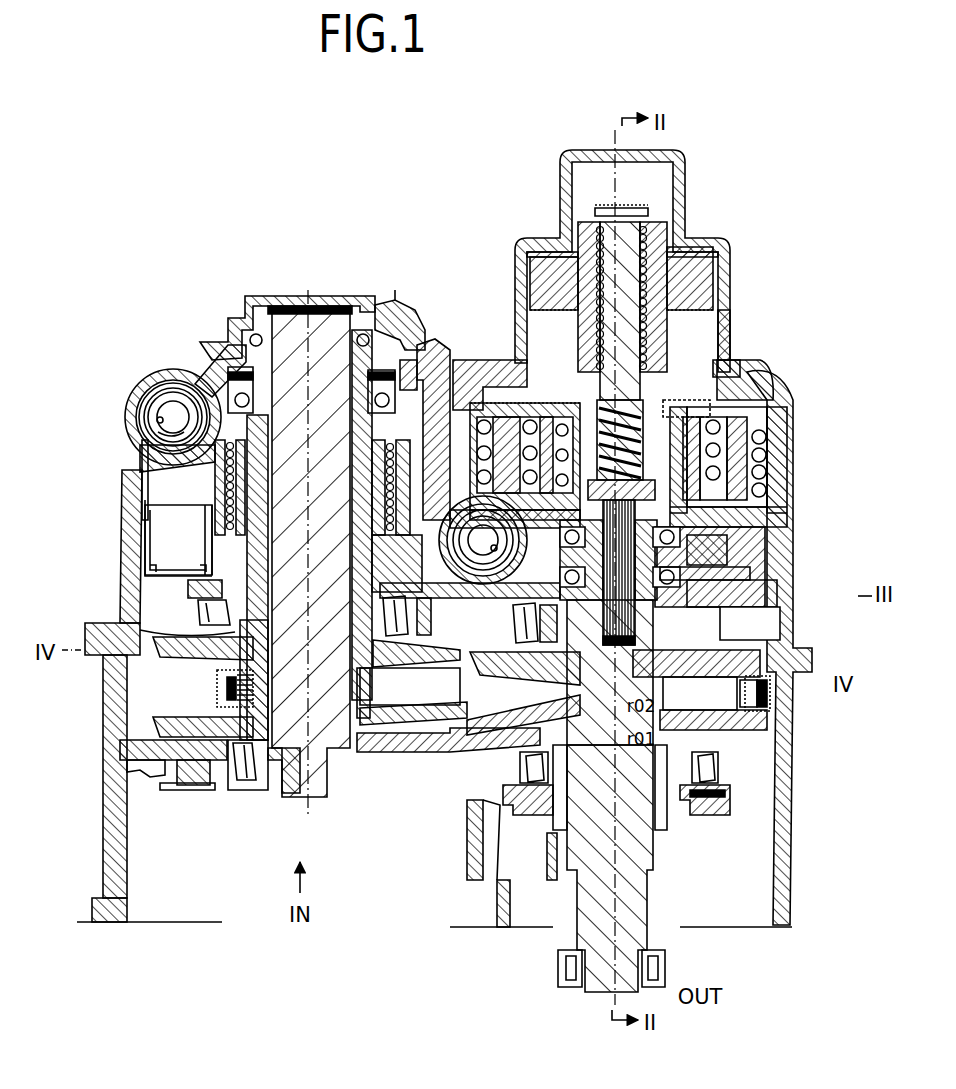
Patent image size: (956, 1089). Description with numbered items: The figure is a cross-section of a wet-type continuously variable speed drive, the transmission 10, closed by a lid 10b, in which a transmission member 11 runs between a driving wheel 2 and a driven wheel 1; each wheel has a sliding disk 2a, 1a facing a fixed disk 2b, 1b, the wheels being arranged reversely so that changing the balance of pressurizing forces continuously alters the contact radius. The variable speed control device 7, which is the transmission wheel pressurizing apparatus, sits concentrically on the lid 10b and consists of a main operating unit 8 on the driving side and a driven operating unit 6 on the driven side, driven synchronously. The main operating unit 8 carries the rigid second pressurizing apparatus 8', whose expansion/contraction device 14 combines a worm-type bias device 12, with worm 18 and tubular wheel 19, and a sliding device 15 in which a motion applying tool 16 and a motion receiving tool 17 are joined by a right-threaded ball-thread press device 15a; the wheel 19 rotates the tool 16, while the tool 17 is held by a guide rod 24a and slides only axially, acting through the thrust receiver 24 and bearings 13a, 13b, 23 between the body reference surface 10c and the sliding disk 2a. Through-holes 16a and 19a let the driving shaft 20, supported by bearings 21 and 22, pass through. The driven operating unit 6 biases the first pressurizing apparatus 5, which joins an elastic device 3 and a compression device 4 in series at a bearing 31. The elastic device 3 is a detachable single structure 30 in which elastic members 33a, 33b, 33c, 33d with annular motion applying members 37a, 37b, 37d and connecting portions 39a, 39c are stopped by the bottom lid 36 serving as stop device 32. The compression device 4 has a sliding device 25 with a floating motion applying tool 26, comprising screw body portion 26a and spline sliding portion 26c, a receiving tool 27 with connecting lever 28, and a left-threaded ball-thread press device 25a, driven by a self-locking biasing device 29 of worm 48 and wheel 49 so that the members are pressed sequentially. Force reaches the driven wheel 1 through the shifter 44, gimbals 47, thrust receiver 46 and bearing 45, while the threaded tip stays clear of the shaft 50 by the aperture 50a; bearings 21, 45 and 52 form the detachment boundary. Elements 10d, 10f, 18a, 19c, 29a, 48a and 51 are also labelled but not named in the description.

The driven transmission wheel 1 is at (553, 860).
The sliding disk 1a is at (500, 722).
The fixed disk 1b is at (517, 662).
The driving transmission wheel 2 is at (338, 788).
The sliding disk 2a is at (175, 646).
The fixed disk 2b is at (176, 726).
The elastic device 3 is at (840, 384).
The compression device 4 is at (716, 320).
The first pressurizing apparatus 5 is at (752, 217).
The driven operating unit 6 is at (503, 236).
The variable speed control device 7 is at (428, 304).
The main operating unit 8 is at (391, 232).
The second pressurizing apparatus 8' is at (147, 535).
The transmission 10 is at (150, 282).
The lid 10b is at (135, 438).
The body reference surface 10c is at (380, 340).
The housing recess 10d is at (750, 623).
The housing bottom wall 10f is at (212, 782).
The transmission member 11 is at (226, 686).
The bias device 12 is at (207, 380).
The bearing 13a is at (236, 385).
The bearing 13b is at (244, 370).
The expansion/contraction device 14 is at (206, 550).
The sliding device 15 is at (206, 524).
The ball-thread press device 15a is at (232, 492).
The motion applying tool 16 is at (236, 457).
The through-hole 16a is at (366, 668).
The motion receiving tool 17 is at (406, 505).
The worm 18 is at (150, 400).
The bearing inner race 18a is at (172, 416).
The wheel 19 is at (400, 372).
The through-hole 19a is at (289, 400).
The sleeve 19c is at (140, 480).
The driving shaft 20 is at (322, 340).
The bearing 21 is at (247, 782).
The bearing 22 is at (259, 336).
The bearing 23 is at (150, 633).
The motion applying device 24 is at (198, 598).
The guide rod 24a is at (142, 576).
The sliding device 25 is at (573, 370).
The ball-thread press device 25a is at (650, 256).
The motion applying tool 26 is at (702, 367).
The screw body portion 26a is at (655, 372).
The sliding portion 26c is at (700, 690).
The receiving tool 27 is at (551, 268).
The connecting lever 28 is at (706, 273).
The biasing device 29 is at (728, 548).
The bearing race 29a is at (778, 592).
The detachable single structure 30 is at (538, 392).
The bearing 31 is at (652, 475).
The stop device 32 is at (722, 390).
The elastic member 33a is at (770, 395).
The elastic member 33b is at (772, 410).
The elastic member 33c is at (770, 432).
The elastic member 33d is at (770, 452).
The bottom lid 36 is at (767, 520).
The motion applying member 37a is at (775, 478).
The motion applying member 37b is at (760, 494).
The motion applying member 37d is at (490, 412).
The connecting portion 39a is at (525, 405).
The connecting portion 39c is at (480, 400).
The shifter 44 is at (710, 814).
The bearing 45 is at (720, 766).
The thrust receiver 46 is at (516, 814).
The gimbals 47 is at (722, 797).
The worm 48 is at (478, 555).
The bearing carrier 48a is at (475, 600).
The wheel 49 is at (752, 573).
The shaft 50 is at (628, 896).
The aperture 50a is at (588, 642).
The snap ring 51 is at (770, 660).
The bearing 52 is at (656, 965).